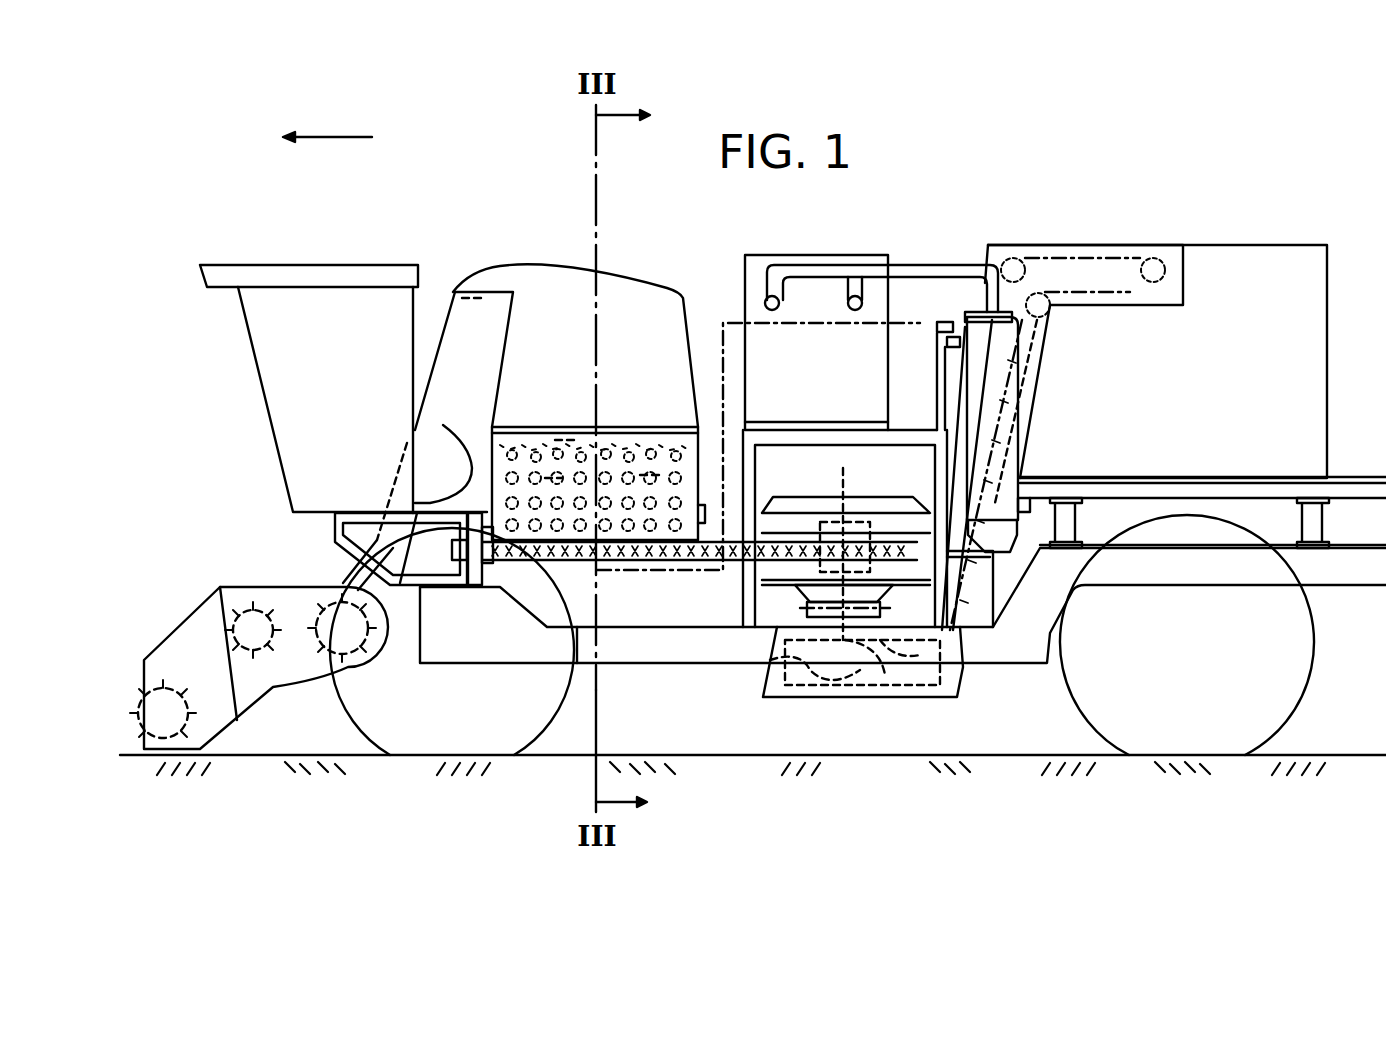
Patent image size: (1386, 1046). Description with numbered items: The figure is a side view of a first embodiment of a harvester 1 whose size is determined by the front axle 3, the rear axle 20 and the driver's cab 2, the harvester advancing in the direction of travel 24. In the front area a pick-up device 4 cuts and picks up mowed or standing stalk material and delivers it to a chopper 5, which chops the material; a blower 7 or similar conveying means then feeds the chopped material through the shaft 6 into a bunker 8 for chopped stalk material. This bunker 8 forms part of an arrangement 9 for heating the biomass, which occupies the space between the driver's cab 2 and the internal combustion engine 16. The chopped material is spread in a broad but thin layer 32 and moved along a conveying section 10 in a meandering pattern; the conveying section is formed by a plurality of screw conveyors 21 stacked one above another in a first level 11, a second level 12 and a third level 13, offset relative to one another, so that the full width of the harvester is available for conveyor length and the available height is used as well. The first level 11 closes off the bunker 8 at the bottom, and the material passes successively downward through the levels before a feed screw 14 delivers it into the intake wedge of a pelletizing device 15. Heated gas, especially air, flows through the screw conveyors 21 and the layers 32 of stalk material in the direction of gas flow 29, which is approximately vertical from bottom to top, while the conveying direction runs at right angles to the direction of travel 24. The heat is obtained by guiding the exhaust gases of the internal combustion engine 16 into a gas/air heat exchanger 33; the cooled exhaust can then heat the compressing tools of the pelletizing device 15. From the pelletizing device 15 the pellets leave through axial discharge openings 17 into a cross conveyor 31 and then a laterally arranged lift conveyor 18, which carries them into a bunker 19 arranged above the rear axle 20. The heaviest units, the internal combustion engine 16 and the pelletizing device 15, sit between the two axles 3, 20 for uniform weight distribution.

The harvester 1 is at (558, 195).
The driver's cab 2 is at (292, 313).
The front axle 3 is at (557, 677).
The pick-up device 4 is at (190, 637).
The chopper 5 is at (300, 603).
The shaft 6 is at (453, 337).
The blower 7 is at (443, 425).
The bunker 8 is at (620, 303).
The arrangement for heating the biomass 9 is at (592, 463).
The conveying section 10 is at (618, 447).
The first level 11 is at (560, 463).
The second level 12 is at (547, 473).
The third level 13 is at (640, 523).
The feed screw 14 is at (567, 557).
The pelletizing device 15 is at (822, 500).
The internal combustion engine 16 is at (760, 282).
The axial discharge openings 17 is at (793, 607).
The lift conveyor 18 is at (847, 650).
The bunker 19 is at (1233, 293).
The rear axle 20 is at (1287, 678).
The screw conveyors 21 is at (500, 560).
The direction of travel 24 is at (338, 135).
The direction of gas flow 29 is at (600, 570).
The cross conveyor 31 is at (873, 617).
The layer of stalk material 32 is at (660, 470).
The gas/air heat exchanger 33 is at (967, 300).